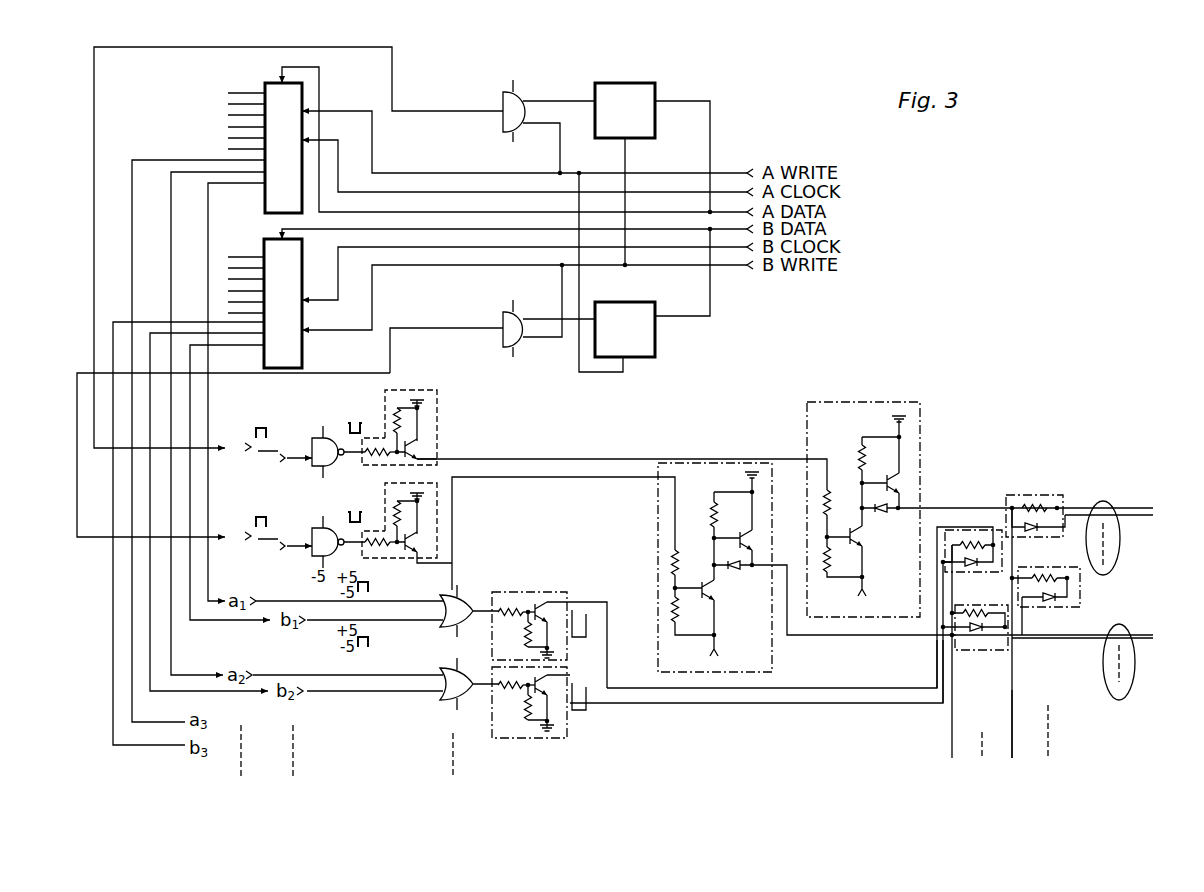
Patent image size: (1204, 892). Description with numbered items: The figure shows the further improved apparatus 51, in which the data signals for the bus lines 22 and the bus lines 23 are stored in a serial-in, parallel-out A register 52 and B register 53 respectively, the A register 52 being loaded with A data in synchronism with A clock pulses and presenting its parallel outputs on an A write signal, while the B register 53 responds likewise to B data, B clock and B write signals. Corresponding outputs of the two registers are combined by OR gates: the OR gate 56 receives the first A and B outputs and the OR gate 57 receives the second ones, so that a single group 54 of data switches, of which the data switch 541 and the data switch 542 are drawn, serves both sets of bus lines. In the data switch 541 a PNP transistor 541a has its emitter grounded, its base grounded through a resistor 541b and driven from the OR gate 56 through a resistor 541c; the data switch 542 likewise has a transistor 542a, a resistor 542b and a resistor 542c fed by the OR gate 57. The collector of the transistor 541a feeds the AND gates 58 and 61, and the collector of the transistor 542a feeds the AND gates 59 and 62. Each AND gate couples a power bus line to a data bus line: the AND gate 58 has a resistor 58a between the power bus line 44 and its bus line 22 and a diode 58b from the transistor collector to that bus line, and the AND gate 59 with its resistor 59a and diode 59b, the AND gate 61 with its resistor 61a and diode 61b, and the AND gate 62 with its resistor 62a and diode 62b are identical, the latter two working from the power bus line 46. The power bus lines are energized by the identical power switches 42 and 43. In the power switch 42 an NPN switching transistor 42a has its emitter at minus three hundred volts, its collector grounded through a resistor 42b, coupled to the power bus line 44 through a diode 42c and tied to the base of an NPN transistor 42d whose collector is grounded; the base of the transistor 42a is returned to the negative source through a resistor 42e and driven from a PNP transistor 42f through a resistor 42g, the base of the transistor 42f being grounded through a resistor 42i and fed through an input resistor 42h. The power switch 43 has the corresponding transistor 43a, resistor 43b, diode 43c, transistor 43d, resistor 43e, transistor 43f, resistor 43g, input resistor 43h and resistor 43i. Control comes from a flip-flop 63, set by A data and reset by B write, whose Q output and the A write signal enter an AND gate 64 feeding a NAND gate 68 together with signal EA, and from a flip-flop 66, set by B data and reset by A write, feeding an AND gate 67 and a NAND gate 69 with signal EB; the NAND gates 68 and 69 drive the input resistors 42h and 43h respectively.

The bus lines 22 is at (1119, 550).
The bus lines 23 is at (1128, 688).
The power switch 42 is at (446, 381).
The NPN switching transistor 42a is at (858, 537).
The resistor 42b is at (858, 452).
The diode 42c is at (882, 512).
The NPN transistor 42d is at (890, 478).
The resistor 42e is at (827, 560).
The PNP transistor 42f is at (428, 446).
The resistor 42g is at (829, 494).
The input resistor 42h is at (388, 456).
The resistor 42i is at (418, 413).
The power switch 43 is at (450, 487).
The NPN switching transistor 43a is at (708, 599).
The resistor 43b is at (710, 527).
The diode 43c is at (741, 571).
The NPN transistor 43d is at (740, 529).
The resistor 43e is at (672, 610).
The PNP transistor 43f is at (428, 540).
The resistor 43g is at (672, 556).
The input resistor 43h is at (417, 556).
The resistor 43i is at (420, 508).
The power bus line 44 is at (967, 510).
The power bus line 46 is at (855, 636).
The apparatus 51 is at (490, 73).
The A register 52 is at (272, 80).
The B register 53 is at (268, 237).
The group of data switches 54 is at (564, 578).
The OR gate 56 is at (442, 630).
The OR gate 57 is at (446, 704).
The AND gate 58 is at (1050, 490).
The resistor 58a is at (1027, 500).
The diode 58b is at (1062, 520).
The AND gate 59 is at (1082, 595).
The resistor 59a is at (1045, 577).
The diode 59b is at (1049, 604).
The AND gate 61 is at (988, 528).
The resistor 61a is at (963, 542).
The diode 61b is at (948, 586).
The AND gate 62 is at (1007, 650).
The resistor 62a is at (992, 598).
The diode 62b is at (975, 648).
The flip-flop 63 is at (633, 83).
The AND gate 64 is at (535, 83).
The flip-flop 66 is at (625, 302).
The AND gate 67 is at (523, 312).
The NAND gate 68 is at (318, 437).
The NAND gate 69 is at (318, 527).
The data switch 541 is at (567, 592).
The PNP transistor 541a is at (550, 607).
The resistor 541b is at (546, 643).
The resistor 541c is at (512, 608).
The data switch 542 is at (567, 738).
The transistor 542a is at (549, 684).
The resistor 542b is at (524, 703).
The resistor 542c is at (498, 692).